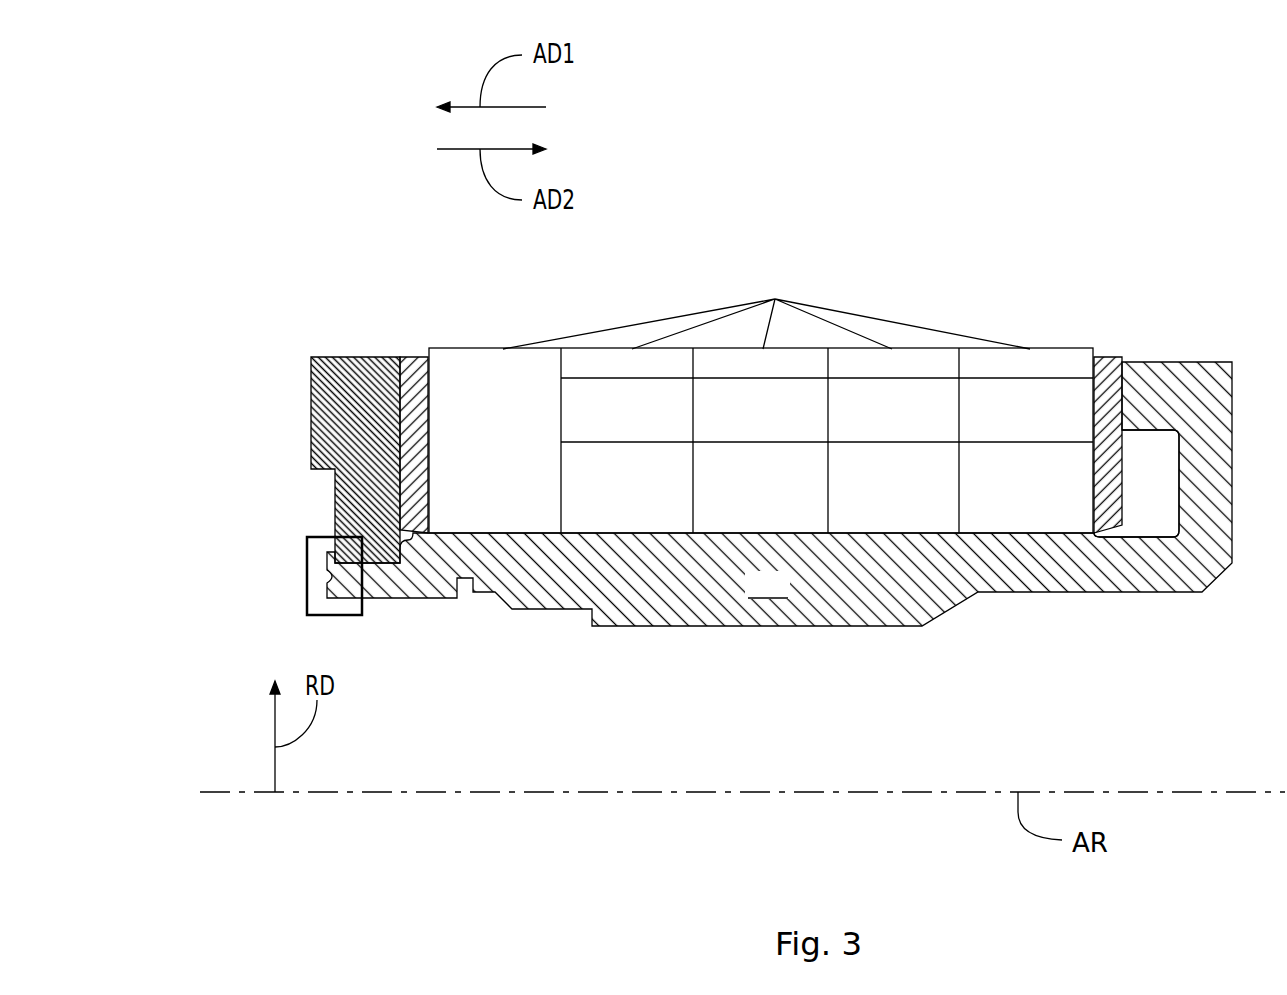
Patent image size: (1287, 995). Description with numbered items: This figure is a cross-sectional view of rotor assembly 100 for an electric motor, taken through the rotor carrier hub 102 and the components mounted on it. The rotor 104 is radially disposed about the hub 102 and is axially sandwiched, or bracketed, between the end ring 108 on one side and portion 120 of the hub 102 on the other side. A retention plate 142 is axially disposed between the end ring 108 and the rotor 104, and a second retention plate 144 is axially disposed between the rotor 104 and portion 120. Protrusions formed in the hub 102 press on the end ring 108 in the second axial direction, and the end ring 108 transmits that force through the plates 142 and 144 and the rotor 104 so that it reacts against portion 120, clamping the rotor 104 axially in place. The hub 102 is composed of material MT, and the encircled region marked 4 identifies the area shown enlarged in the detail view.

The rotor assembly 100 is at (1057, 119).
The rotor carrier hub 102 is at (1203, 359).
The rotor 104 is at (1050, 317).
The end ring 108 is at (348, 355).
The portion of hub 120 is at (1159, 380).
The retention plate 142 is at (414, 355).
The retention plate 144 is at (1107, 357).
The detail view 4 region 4 is at (362, 615).